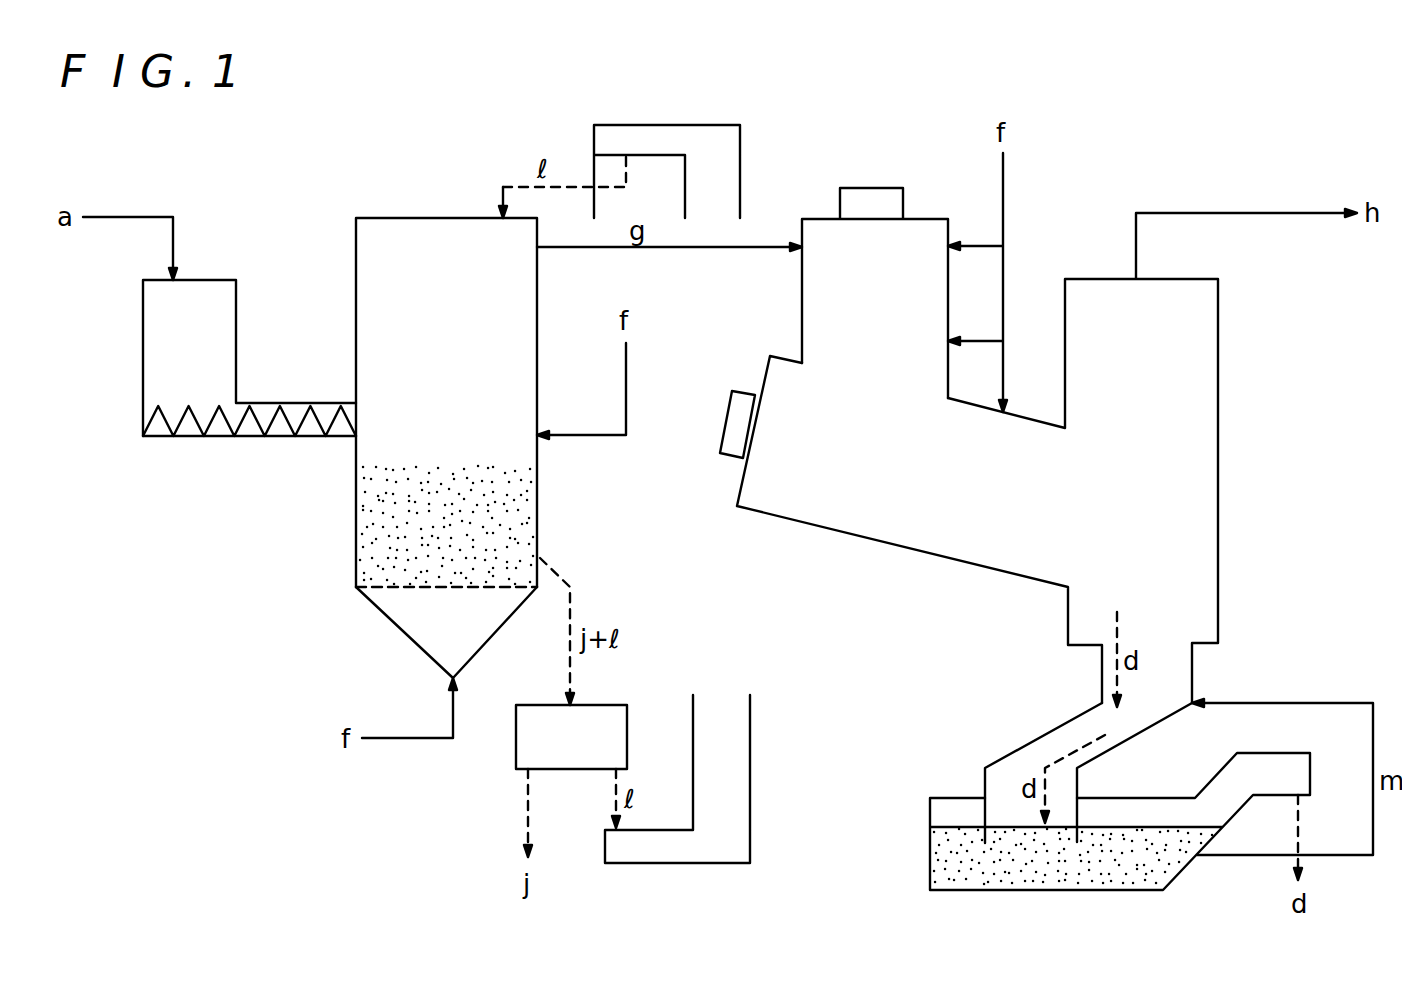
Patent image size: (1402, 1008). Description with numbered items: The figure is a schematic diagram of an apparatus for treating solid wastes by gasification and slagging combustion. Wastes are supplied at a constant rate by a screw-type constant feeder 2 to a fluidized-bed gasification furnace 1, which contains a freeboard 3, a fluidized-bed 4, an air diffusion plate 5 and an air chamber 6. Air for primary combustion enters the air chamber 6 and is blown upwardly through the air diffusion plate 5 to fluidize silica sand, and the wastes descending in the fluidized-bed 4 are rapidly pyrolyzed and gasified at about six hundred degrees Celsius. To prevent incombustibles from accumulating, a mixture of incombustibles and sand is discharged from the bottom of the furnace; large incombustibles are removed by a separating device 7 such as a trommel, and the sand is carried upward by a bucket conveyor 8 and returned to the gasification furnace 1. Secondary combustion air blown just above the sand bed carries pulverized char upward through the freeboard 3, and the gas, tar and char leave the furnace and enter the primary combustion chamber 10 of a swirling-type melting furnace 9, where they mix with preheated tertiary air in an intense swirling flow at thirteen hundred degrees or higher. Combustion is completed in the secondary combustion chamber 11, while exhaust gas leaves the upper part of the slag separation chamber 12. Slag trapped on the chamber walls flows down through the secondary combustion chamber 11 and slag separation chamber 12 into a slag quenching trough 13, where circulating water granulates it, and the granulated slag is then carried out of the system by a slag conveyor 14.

The fluidized-bed gasification furnace 1 is at (355, 281).
The constant feeder 2 is at (143, 338).
The freeboard 3 is at (510, 302).
The fluidized-bed 4 is at (527, 527).
The air diffusion plate 5 is at (513, 592).
The air chamber 6 is at (412, 622).
The separating device 7 is at (516, 753).
The bucket conveyor 8 is at (750, 782).
The swirling-type melting furnace 9 is at (867, 538).
The primary combustion chamber 10 is at (895, 318).
The secondary combustion chamber 11 is at (975, 489).
The slag separation chamber 12 is at (1165, 473).
The slag quenching trough 13 is at (1027, 745).
The slag conveyor 14 is at (930, 845).